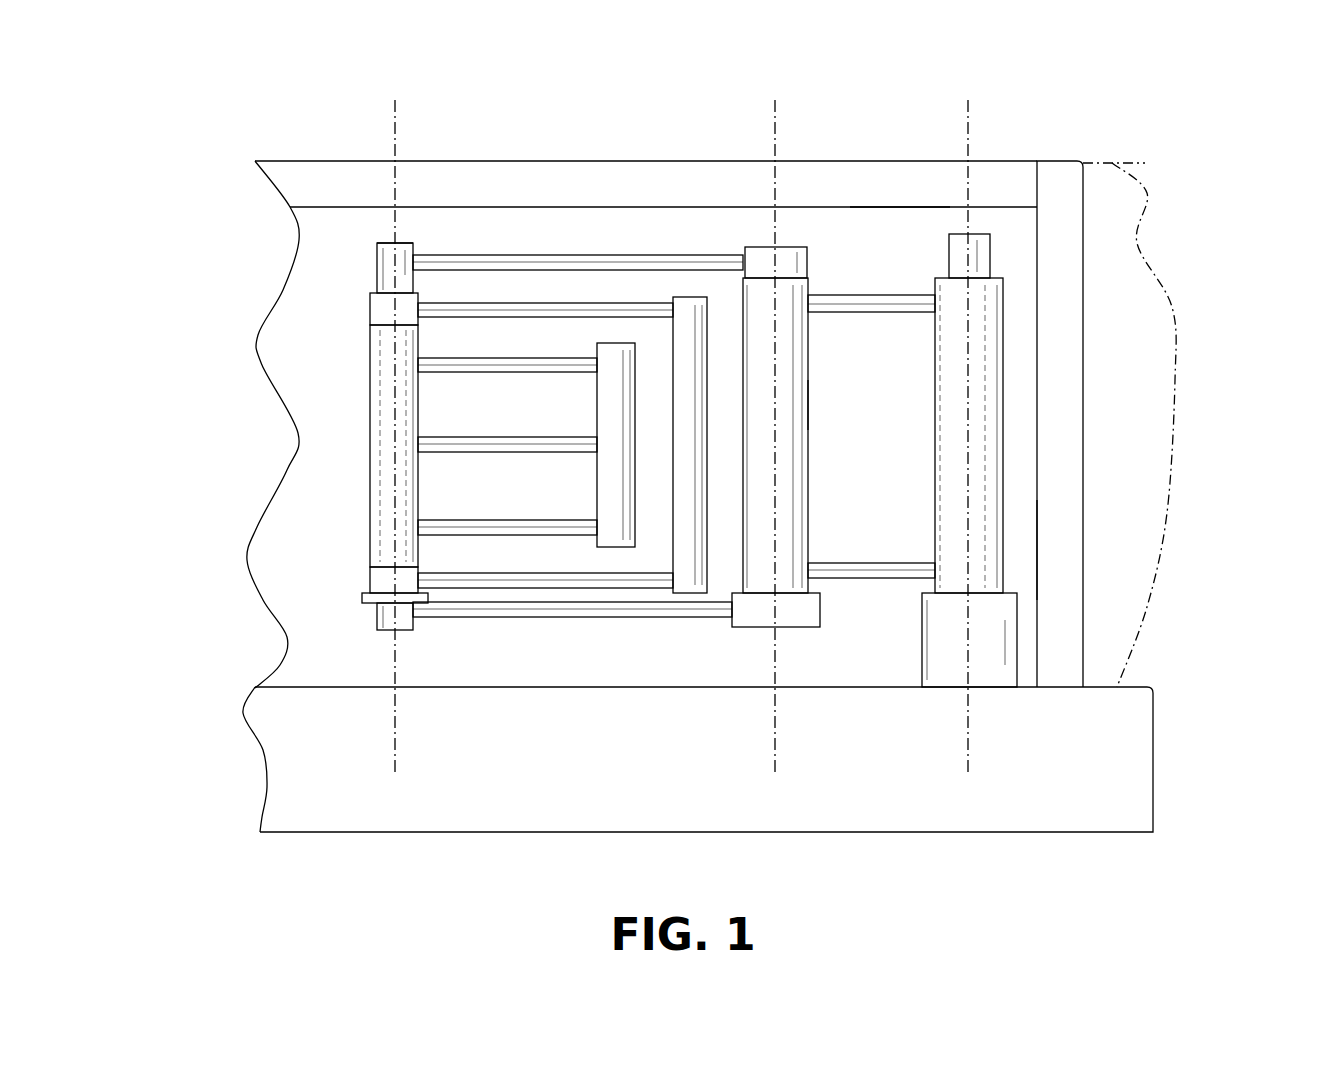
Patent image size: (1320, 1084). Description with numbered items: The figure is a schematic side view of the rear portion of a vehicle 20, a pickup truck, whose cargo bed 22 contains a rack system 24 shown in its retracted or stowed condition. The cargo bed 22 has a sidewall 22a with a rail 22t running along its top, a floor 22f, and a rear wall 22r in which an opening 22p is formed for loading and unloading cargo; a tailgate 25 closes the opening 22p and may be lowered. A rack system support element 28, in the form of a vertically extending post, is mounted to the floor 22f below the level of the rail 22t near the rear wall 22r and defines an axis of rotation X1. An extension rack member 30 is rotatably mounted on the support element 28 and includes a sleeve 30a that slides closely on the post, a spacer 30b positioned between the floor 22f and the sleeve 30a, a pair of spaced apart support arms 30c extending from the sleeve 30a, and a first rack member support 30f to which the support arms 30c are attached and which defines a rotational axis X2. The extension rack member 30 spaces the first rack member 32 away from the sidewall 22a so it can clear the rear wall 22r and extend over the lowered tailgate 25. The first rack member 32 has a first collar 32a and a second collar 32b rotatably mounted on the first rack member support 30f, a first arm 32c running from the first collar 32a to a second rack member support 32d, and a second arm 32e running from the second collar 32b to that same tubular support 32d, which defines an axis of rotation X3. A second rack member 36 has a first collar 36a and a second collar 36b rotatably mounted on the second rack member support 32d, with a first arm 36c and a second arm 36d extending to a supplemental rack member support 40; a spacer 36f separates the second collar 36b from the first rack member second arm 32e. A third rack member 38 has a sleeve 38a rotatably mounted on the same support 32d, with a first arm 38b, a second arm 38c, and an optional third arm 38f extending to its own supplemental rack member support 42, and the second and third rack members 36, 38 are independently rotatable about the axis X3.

The vehicle 20 is at (254, 143).
The cargo bed 22 is at (313, 522).
The rail 22t is at (280, 161).
The sidewall 22a is at (890, 243).
The rear wall 22r is at (1062, 192).
The opening 22p is at (1011, 552).
The floor 22f is at (330, 686).
The rack system 24 is at (353, 571).
The tailgate 25 is at (1112, 163).
The rack system support element 28 is at (990, 243).
The extension rack member 30 is at (1004, 305).
The sleeve 30a is at (1003, 413).
The spacer 30b is at (1010, 643).
The support arms 30c is at (882, 304).
The first rack member support 30f is at (800, 403).
The first rack member 32 is at (809, 277).
The first collar 32a is at (745, 252).
The second collar 32b is at (813, 610).
The first rack member first arm 32c is at (630, 255).
The second rack member support 32d is at (377, 248).
The first rack member second arm 32e is at (545, 617).
The second rack member 36 is at (424, 291).
The first collar 36a is at (380, 310).
The second collar 36b is at (370, 585).
The second rack member first arm 36c is at (488, 302).
The second rack member second arm 36d is at (505, 588).
The spacer 36f is at (373, 603).
The third rack member 38 is at (371, 352).
The sleeve 38a is at (382, 408).
The third rack member first arm 38b is at (558, 357).
The third rack member second arm 38c is at (548, 535).
The third arm 38f is at (465, 453).
The supplemental rack member support 40 is at (690, 594).
The supplemental rack member support 42 is at (612, 548).
The axis of rotation X1 is at (972, 143).
The rotational axis X2 is at (780, 143).
The axis of rotation X3 is at (393, 144).